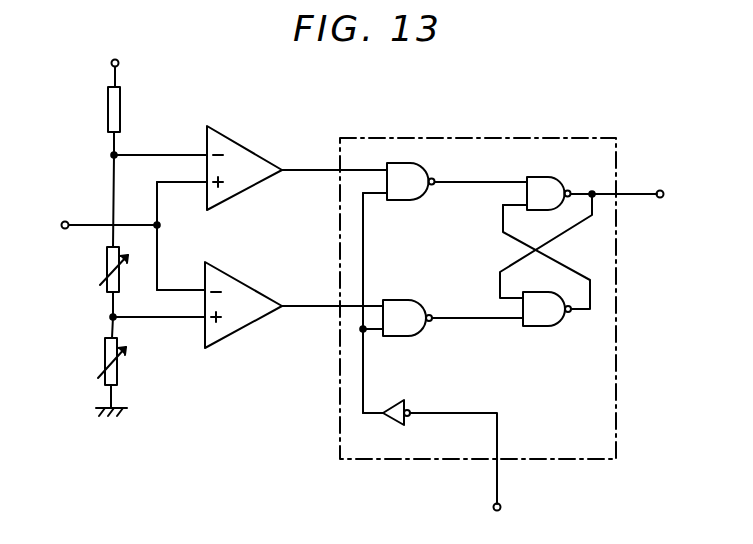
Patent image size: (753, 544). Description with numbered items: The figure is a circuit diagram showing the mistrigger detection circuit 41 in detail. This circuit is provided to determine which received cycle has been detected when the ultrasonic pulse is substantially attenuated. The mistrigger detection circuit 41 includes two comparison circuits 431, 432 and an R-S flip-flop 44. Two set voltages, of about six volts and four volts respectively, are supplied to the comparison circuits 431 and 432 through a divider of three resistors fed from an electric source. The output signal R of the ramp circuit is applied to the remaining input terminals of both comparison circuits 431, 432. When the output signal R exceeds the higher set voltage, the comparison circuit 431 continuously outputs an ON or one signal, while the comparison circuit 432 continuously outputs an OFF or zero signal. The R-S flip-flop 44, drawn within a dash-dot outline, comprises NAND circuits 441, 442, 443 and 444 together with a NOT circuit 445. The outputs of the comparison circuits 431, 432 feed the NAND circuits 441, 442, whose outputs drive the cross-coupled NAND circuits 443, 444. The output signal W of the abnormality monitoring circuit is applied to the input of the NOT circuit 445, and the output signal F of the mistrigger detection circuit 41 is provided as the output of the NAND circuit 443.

The mistrigger detection circuit 41 is at (199, 445).
The comparison circuit 431 is at (248, 153).
The comparison circuit 432 is at (248, 295).
The R-S flip-flop 44 is at (503, 147).
The NAND circuit 441 is at (412, 174).
The NAND circuit 442 is at (408, 312).
The NAND circuit 443 is at (542, 183).
The NAND circuit 444 is at (540, 323).
The NOT circuit 445 is at (406, 409).